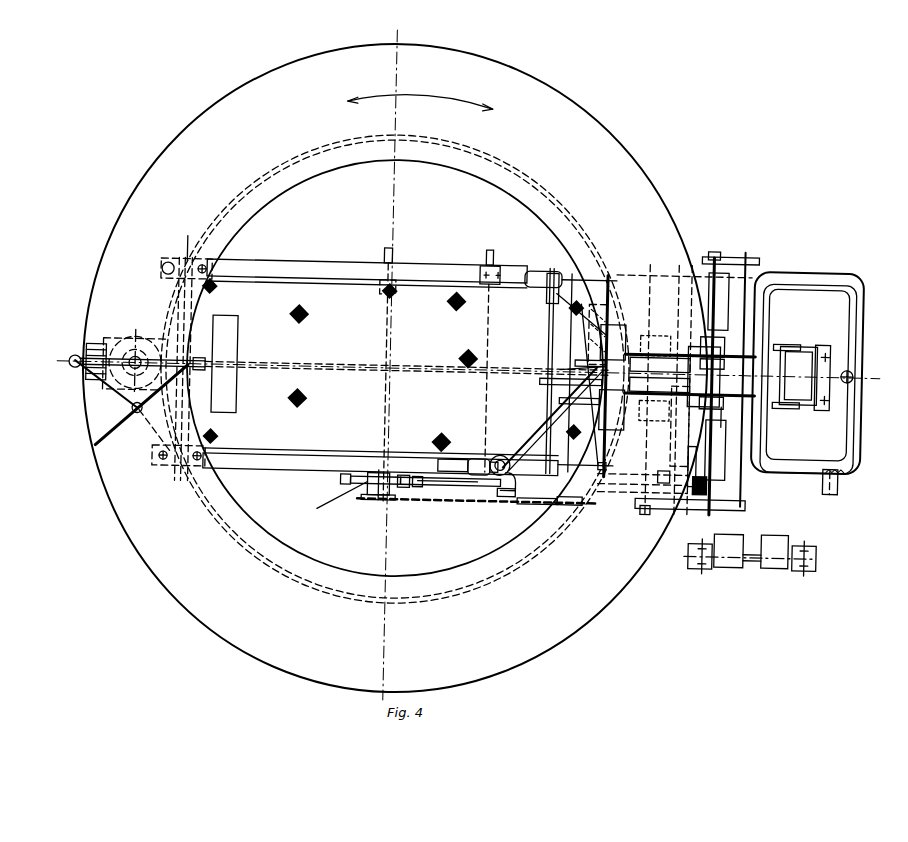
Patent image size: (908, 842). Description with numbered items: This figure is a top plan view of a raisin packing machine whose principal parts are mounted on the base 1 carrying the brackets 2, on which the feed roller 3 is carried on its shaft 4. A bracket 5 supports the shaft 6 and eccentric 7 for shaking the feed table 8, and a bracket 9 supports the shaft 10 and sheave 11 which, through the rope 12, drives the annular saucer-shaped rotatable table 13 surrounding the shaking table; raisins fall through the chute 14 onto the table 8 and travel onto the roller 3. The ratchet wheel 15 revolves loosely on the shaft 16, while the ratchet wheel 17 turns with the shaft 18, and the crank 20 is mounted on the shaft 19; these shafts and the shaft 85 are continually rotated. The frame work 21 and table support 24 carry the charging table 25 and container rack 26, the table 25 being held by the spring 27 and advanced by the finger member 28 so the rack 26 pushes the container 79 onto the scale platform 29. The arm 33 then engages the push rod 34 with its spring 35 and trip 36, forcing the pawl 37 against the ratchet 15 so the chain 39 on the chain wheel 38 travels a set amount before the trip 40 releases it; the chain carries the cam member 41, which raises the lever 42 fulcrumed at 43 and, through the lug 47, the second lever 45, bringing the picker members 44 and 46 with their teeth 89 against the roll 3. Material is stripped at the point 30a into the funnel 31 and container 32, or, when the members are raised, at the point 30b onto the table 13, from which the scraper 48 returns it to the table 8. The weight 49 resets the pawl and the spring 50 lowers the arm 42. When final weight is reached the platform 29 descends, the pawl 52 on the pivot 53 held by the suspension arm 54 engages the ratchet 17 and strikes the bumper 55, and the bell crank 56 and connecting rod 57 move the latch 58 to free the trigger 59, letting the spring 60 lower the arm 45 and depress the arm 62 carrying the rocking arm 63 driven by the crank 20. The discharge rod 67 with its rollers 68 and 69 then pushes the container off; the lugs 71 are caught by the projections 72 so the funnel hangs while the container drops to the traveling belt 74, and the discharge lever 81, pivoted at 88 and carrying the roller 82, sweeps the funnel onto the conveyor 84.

The base 1 is at (170, 276).
The brackets 2 is at (540, 270).
The feed roller 3 is at (608, 320).
The shaft 4 is at (608, 300).
The bracket 5 is at (160, 272).
The shaft 6 is at (184, 256).
The eccentric 7 is at (200, 375).
The feed table 8 is at (178, 312).
The bracket 9 is at (142, 352).
The shaft 10 is at (130, 350).
The sheave 11 is at (112, 360).
The rope 12 is at (548, 210).
The annular rotatable table 13 is at (250, 203).
The chute 14 is at (232, 322).
The ratchet wheel 15 is at (368, 482).
The shaft 16 is at (389, 256).
The ratchet wheel 17 is at (748, 497).
The shaft 18 is at (722, 450).
The shaft 19 is at (483, 250).
The crank 20 is at (472, 463).
The frame work 21 is at (725, 301).
The table support 24 is at (840, 470).
The table 25 is at (820, 453).
The container rack 26 is at (780, 337).
The spring 27 is at (846, 463).
The finger member 28 is at (853, 370).
The scale platform 29 is at (718, 340).
The stripping point 30a is at (722, 330).
The stripping point 30b is at (668, 330).
The funnel 31 is at (731, 421).
The container 32 is at (696, 345).
The arm 33 is at (825, 478).
The push rod 34 is at (470, 477).
The spring 35 is at (448, 483).
The trip 36 is at (422, 488).
The pawl 37 is at (407, 488).
The chain wheel 38 is at (368, 500).
The chain 39 is at (383, 500).
The trip 40 is at (343, 480).
The cam member 41 is at (540, 378).
The lever of the first order 42 is at (575, 357).
The fulcrum 43 is at (600, 440).
The primary picker member 44 is at (662, 386).
The second lever of the first order 45 is at (565, 420).
The picker member 46 is at (662, 352).
The lug 47 is at (560, 366).
The scraper 48 is at (97, 454).
The weight 49 is at (330, 501).
The spring 50 is at (560, 397).
The pawl 52 is at (703, 490).
The pivot 53 is at (668, 480).
The suspension arm 54 is at (682, 410).
The bumper 55 is at (565, 500).
The bell crank 56 is at (486, 499).
The connecting rod 57 is at (530, 500).
The latch 58 is at (500, 489).
The trigger 59 is at (510, 465).
The spring 60 is at (555, 410).
The arm 62 is at (455, 458).
The rocking arm 63 is at (492, 455).
The discharge rod 67 is at (645, 259).
The roller 68 is at (648, 258).
The roller 69 is at (677, 258).
The lugs 71 is at (706, 345).
The projections 72 is at (720, 352).
The traveling belt 74 is at (732, 560).
The container 79 is at (798, 376).
The discharge lever 81 is at (757, 253).
The roller 82 is at (700, 452).
The conveyor 84 is at (780, 560).
The shaft 85 is at (756, 554).
The pivot 88 is at (711, 252).
The teeth 89 is at (655, 371).